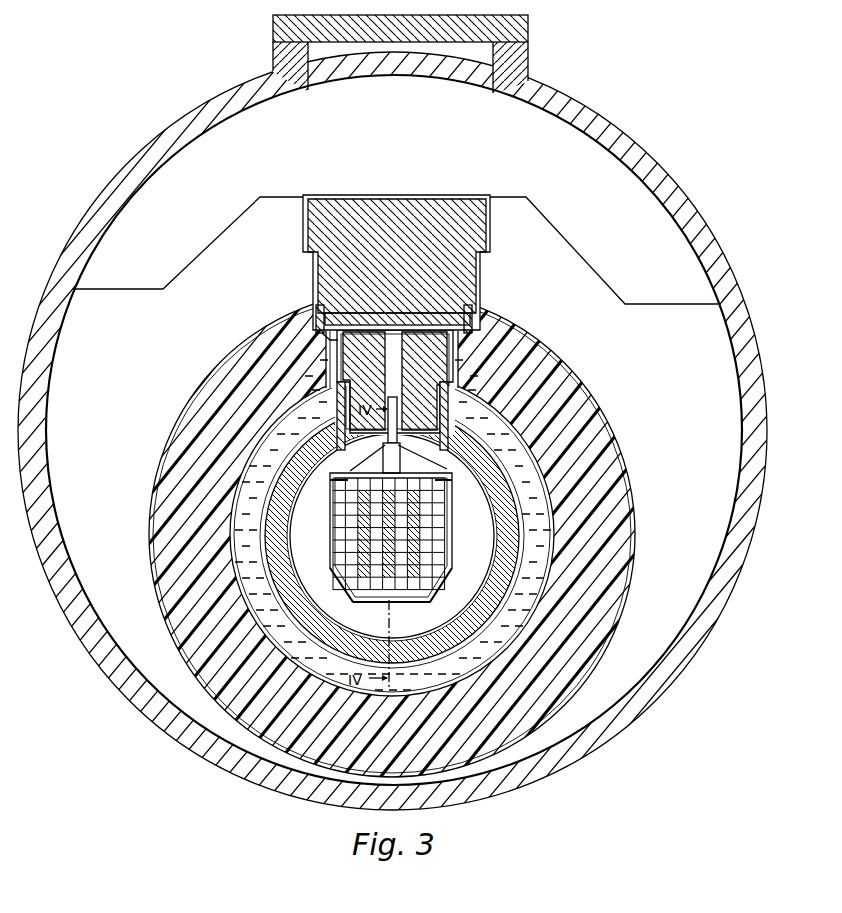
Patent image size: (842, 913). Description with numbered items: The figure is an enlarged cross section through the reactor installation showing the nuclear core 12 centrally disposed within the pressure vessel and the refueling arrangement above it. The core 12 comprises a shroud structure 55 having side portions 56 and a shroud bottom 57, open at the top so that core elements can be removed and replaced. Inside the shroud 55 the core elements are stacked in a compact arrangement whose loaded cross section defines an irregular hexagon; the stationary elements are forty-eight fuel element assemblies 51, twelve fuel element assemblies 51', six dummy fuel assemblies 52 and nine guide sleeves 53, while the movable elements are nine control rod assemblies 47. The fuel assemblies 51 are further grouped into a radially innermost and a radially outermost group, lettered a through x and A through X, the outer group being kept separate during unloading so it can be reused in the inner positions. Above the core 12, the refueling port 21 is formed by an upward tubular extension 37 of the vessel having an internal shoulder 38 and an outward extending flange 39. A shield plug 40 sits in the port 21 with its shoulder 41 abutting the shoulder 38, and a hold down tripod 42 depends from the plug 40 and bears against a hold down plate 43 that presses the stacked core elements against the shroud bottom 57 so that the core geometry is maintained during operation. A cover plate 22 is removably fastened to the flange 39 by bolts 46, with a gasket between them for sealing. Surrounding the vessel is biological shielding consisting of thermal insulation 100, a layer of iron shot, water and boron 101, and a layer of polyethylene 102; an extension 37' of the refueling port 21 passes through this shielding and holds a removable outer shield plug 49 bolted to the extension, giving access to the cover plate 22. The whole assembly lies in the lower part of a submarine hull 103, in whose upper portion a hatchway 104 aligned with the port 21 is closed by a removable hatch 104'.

The nuclear core 12 is at (457, 556).
The refueling port 21 is at (441, 430).
The cover plate 22 is at (415, 320).
The upward tubular extension 37 is at (374, 416).
The extension of the refueling port 37' is at (375, 262).
The internal shoulder 38 is at (424, 381).
The outward extending flange 39 is at (328, 338).
The shield plug 40 is at (345, 353).
The shoulder 41 is at (364, 381).
The hold down tripod 42 is at (402, 455).
The hold down plate 43 is at (447, 470).
The bolts 46 is at (323, 318).
The control rod assemblies 47 is at (332, 505).
The outer shield plug 49 is at (443, 213).
The fuel element assemblies 51 is at (447, 589).
The fuel element assemblies 51' is at (342, 531).
The dummy fuel assemblies 52 is at (332, 485).
The guide sleeves 53 is at (333, 521).
The shroud structure 55 is at (333, 542).
The side portions 56 is at (333, 560).
The shroud bottom 57 is at (400, 604).
The thermal insulation 100 is at (512, 518).
The layer of iron shot, water and boron 101 is at (540, 475).
The layer of polyethylene 102 is at (622, 493).
The submarine hull 103 is at (721, 597).
The hatchway 104 is at (400, 81).
The removable hatch 104' is at (429, 29).